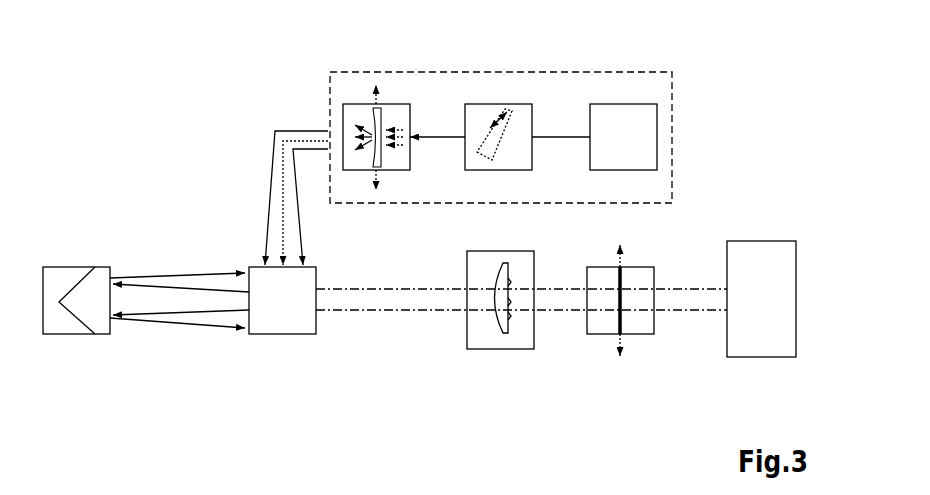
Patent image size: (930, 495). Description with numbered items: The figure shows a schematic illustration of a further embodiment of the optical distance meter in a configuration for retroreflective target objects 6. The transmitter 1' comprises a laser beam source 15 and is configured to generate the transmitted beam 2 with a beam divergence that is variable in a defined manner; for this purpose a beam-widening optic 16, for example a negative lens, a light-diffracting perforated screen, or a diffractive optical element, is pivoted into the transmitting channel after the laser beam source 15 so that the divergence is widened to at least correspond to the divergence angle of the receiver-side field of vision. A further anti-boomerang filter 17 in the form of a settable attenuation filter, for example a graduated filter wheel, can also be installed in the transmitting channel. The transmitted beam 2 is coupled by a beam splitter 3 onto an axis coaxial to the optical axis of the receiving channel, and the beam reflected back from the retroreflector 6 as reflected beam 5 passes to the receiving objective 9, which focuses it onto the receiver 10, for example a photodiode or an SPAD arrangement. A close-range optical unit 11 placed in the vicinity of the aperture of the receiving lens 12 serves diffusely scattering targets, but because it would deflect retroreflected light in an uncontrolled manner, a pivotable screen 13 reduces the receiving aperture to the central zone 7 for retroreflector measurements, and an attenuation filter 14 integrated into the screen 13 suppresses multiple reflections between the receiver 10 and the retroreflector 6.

The transmitter 1' is at (557, 130).
The transmitted beam 2 is at (179, 245).
The beam splitter 3 is at (266, 343).
The reflected beam 5 is at (179, 354).
The retroreflector 6 is at (70, 272).
The central zone 7 is at (521, 325).
The receiving objective 9 is at (447, 324).
The receiver 10 is at (778, 276).
The close-range optical unit 11 is at (434, 284).
The receiving lens 12 is at (509, 299).
The screen 13 is at (611, 329).
The attenuation filter 14 is at (665, 320).
The laser beam source 15 is at (659, 89).
The beam-widening optic 16 is at (333, 102).
The anti-boomerang filter 17 is at (462, 92).